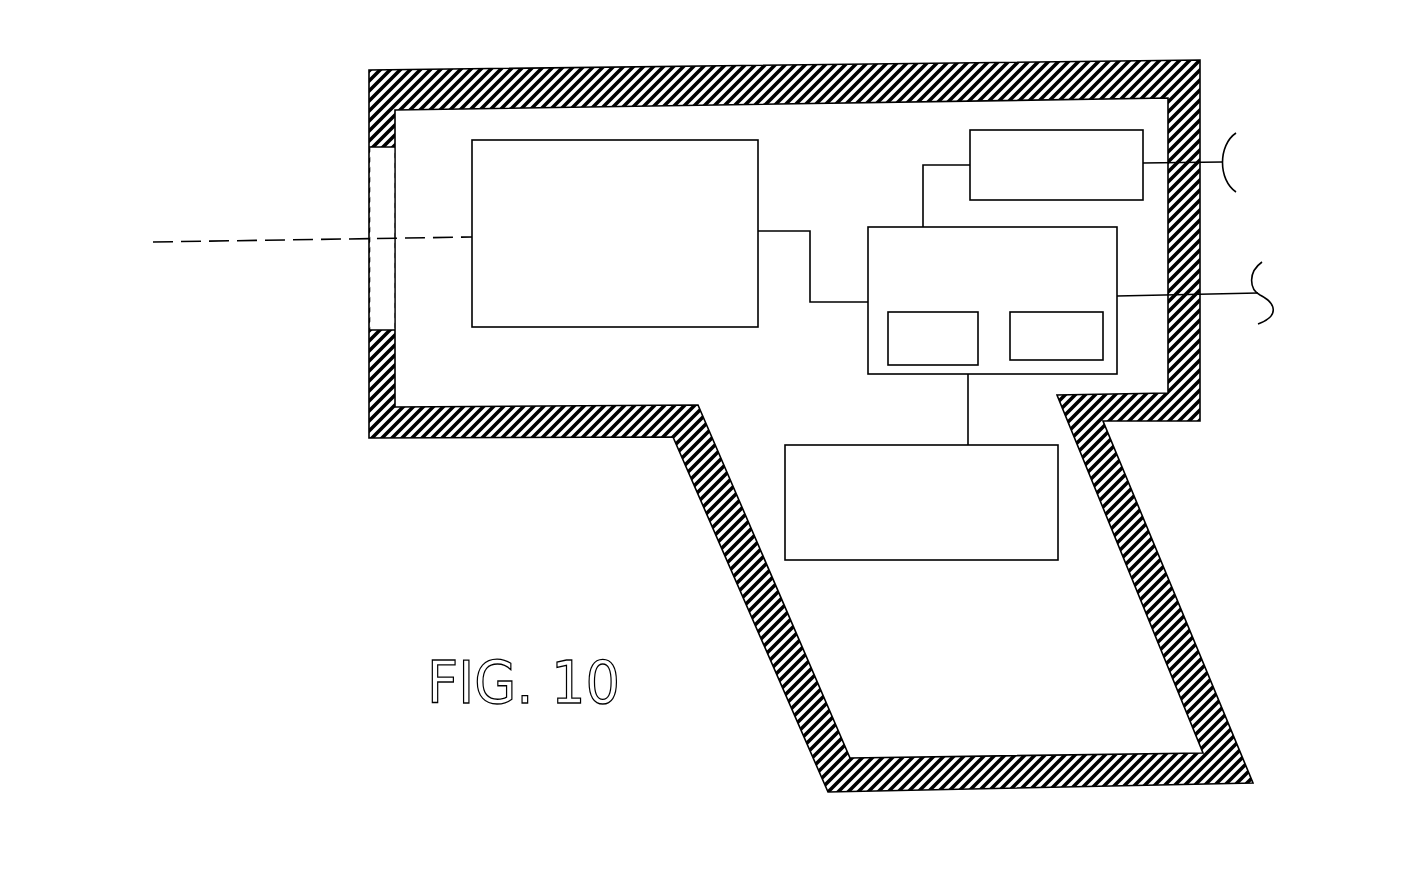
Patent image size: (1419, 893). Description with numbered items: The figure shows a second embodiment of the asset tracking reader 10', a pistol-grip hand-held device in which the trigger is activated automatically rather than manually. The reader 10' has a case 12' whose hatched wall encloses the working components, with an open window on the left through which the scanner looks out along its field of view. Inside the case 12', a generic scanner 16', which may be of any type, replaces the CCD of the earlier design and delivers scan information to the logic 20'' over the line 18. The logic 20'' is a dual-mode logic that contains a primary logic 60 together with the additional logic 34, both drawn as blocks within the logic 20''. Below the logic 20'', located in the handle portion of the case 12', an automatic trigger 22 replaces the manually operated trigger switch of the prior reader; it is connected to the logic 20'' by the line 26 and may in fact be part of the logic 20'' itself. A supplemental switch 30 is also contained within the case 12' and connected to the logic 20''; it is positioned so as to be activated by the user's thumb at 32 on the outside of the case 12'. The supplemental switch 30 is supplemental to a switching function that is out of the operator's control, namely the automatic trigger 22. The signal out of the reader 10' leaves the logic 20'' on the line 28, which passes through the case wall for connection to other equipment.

The reader 10' is at (780, 426).
The case 12' is at (811, 426).
The scanner 16' is at (615, 257).
The line 18 is at (812, 243).
The logic 20'' is at (948, 312).
The automatic trigger 22 is at (920, 560).
The line 26 is at (968, 410).
The line 28 is at (1222, 296).
The supplemental switch 30 is at (966, 137).
The thumb activation location 32 is at (1234, 166).
The additional logic 34 is at (1040, 312).
The primary logic 60 is at (957, 312).